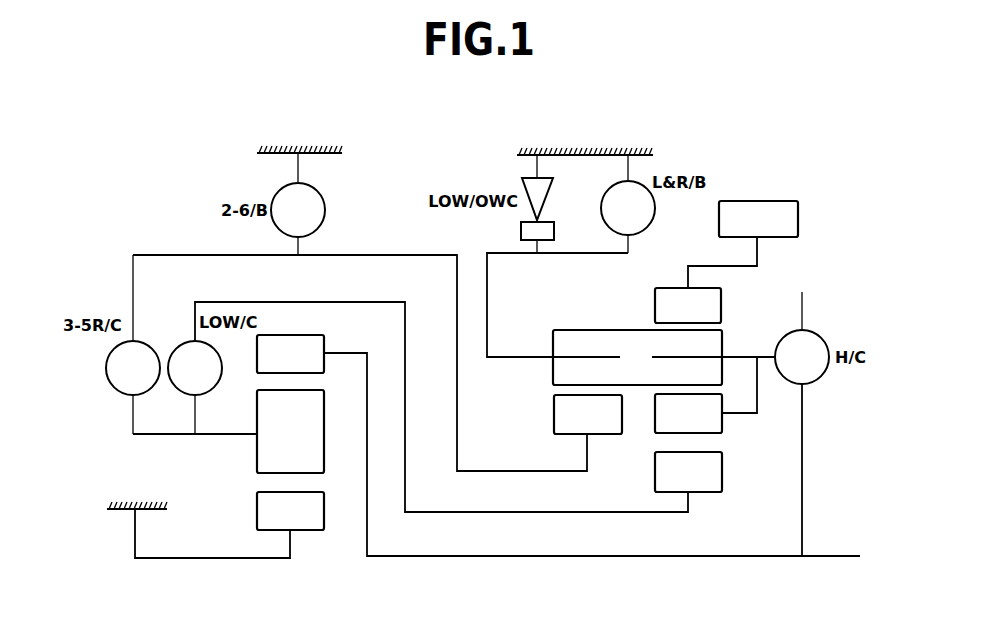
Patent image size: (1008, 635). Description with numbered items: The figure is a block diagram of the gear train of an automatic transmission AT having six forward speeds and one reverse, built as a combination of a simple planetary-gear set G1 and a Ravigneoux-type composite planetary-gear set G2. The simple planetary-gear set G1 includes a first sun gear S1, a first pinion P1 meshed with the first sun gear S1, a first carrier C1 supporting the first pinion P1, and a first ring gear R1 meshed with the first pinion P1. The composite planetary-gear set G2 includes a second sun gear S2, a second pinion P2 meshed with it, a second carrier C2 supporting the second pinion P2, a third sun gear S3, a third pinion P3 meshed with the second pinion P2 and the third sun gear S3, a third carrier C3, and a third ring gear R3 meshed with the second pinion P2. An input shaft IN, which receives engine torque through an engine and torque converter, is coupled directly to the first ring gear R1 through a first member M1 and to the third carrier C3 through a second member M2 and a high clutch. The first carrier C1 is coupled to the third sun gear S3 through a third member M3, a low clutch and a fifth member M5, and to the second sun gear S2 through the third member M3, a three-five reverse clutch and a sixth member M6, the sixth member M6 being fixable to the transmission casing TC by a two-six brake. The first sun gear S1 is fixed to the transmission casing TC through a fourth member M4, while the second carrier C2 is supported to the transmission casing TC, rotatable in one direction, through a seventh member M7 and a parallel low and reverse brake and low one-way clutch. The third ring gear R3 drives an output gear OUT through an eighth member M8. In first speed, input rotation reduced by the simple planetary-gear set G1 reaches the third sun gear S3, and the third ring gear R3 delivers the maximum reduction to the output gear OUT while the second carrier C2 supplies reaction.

The transmission casing TC is at (266, 153).
The automatic transmission AT is at (455, 133).
The first member M1 is at (553, 558).
The second member M2 is at (802, 470).
The third member M3 is at (222, 436).
The fourth member M4 is at (222, 556).
The fifth member M5 is at (473, 512).
The sixth member M6 is at (473, 470).
The seventh member M7 is at (487, 280).
The eighth member M8 is at (700, 265).
The first carrier C1 is at (257, 427).
The second carrier C2 is at (553, 356).
The third carrier C3 is at (722, 357).
The simple planetary-gear set G1 is at (318, 542).
The Ravigneoux-type composite planetary-gear set G2 is at (710, 500).
The first pinion P1 is at (290, 431).
The second pinion P2 is at (664, 357).
The third pinion P3 is at (706, 395).
The first ring gear R1 is at (290, 354).
The third ring gear R3 is at (688, 305).
The first sun gear S1 is at (290, 511).
The second sun gear S2 is at (588, 414).
The third sun gear S3 is at (688, 472).
The output gear OUT is at (758, 219).
The input shaft IN is at (846, 543).